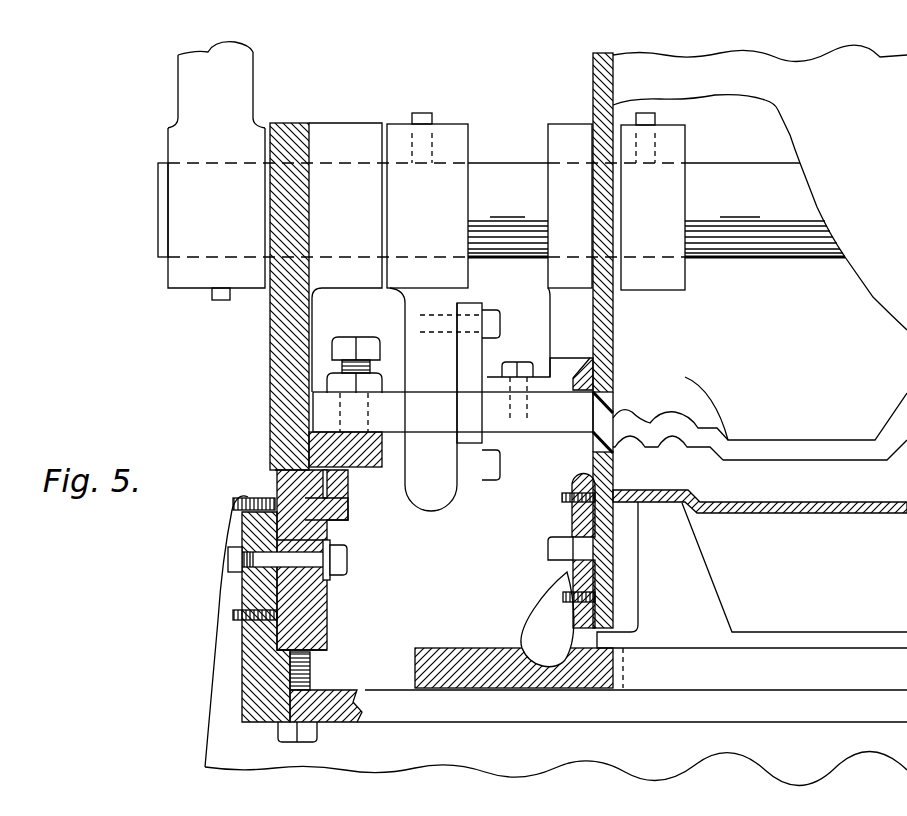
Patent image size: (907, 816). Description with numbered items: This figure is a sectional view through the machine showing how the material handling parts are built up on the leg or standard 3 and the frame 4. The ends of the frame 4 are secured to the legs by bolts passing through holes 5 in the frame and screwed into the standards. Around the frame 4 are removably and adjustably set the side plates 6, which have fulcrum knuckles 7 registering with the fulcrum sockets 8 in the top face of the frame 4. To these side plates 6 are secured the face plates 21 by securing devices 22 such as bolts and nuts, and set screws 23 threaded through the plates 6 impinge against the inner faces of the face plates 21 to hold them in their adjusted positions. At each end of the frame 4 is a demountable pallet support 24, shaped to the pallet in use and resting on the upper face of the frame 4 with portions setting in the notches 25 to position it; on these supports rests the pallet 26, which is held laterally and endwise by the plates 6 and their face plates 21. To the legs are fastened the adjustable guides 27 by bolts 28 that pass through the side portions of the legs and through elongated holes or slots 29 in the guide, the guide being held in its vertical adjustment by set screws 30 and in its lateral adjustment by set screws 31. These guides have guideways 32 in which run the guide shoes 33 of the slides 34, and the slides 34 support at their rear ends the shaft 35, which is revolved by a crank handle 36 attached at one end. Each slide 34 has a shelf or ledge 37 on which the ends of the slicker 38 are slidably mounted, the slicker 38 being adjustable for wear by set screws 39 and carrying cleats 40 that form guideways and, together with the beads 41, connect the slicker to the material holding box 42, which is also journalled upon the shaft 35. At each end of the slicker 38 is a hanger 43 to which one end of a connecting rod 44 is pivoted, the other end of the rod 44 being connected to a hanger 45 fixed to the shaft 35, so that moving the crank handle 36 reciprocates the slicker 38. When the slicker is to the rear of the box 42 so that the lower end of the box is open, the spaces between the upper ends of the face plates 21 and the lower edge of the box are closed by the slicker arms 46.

The leg or standard 3 is at (206, 725).
The frame 4 is at (515, 688).
The holes 5 is at (463, 648).
The side plates 6 is at (572, 512).
The fulcrum knuckles 7 is at (542, 622).
The fulcrum sockets 8 is at (508, 648).
The face plates 21 is at (612, 580).
The securing devices 22 is at (548, 546).
The set screws 23 is at (562, 497).
The pallet support 24 is at (707, 608).
The notches 25 is at (625, 690).
The pallet 26 is at (885, 515).
The adjustable guides 27 is at (328, 620).
The bolts 28 is at (228, 556).
The elongated holes or slots 29 is at (332, 577).
The set screws 30 is at (317, 735).
The set screws 31 is at (233, 504).
The guideways 32 is at (273, 482).
The guide shoes 33 is at (348, 512).
The slides 34 is at (270, 366).
The shaft 35 is at (158, 204).
The crank handle 36 is at (176, 75).
The shelf or ledge 37 is at (313, 415).
The slicker 38 is at (577, 417).
The set screws 39 is at (332, 342).
The cleats 40 is at (556, 360).
The beads 41 is at (613, 350).
The material holding box 42 is at (618, 53).
The hanger 43 is at (437, 508).
The connecting rod 44 is at (485, 440).
The hanger 45 is at (468, 278).
The slicker arms 46 is at (613, 417).